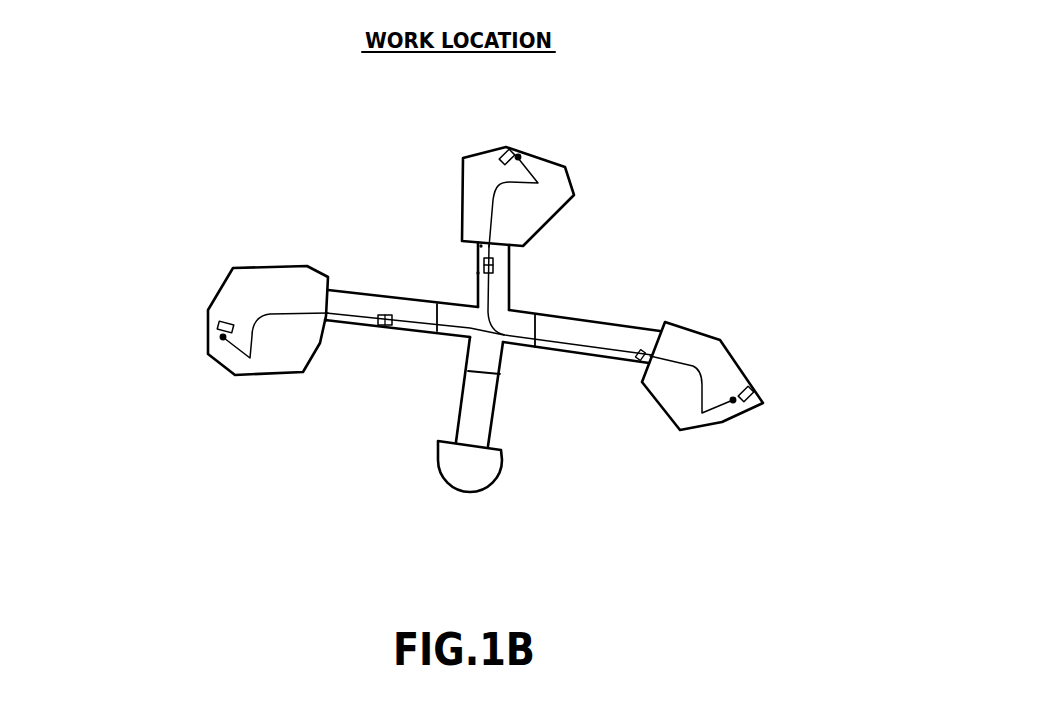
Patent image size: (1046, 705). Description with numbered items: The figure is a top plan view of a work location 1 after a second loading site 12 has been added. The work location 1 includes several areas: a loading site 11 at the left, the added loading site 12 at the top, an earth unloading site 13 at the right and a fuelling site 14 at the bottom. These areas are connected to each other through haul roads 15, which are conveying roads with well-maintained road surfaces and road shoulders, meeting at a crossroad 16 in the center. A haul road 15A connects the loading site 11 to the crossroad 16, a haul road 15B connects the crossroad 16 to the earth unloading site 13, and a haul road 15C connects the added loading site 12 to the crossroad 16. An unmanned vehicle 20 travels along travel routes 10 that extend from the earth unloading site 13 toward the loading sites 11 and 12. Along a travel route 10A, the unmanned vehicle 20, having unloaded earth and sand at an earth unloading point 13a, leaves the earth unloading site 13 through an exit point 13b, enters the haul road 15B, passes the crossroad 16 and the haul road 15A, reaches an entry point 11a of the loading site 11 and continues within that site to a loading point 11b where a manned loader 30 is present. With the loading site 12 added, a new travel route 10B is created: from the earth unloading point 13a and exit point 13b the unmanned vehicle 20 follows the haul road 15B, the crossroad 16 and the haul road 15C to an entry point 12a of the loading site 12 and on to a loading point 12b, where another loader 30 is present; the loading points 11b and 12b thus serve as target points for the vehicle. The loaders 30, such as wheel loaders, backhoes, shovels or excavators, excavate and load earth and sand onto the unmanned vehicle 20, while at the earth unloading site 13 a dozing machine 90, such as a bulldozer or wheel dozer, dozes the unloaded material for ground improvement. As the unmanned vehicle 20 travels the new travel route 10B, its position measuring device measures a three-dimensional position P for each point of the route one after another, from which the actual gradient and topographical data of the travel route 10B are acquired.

The work location 1 is at (627, 129).
The travel routes 10 is at (289, 490).
The travel route 10A is at (420, 329).
The travel route 10B is at (490, 295).
The loading site 11 is at (268, 268).
The entry point 11a is at (328, 322).
The loading point 11b is at (221, 338).
The loading site 12 is at (573, 183).
The entry point 12a is at (483, 247).
The loading point 12b is at (521, 156).
The earth unloading site 13 is at (690, 326).
The earth unloading point 13a is at (735, 403).
The exit point 13b is at (636, 362).
The fuelling site 14 is at (502, 468).
The haul roads 15 is at (290, 547).
The haul road 15A is at (385, 297).
The haul road 15B is at (624, 314).
The haul road 15C is at (510, 283).
The crossroad 16 is at (508, 344).
The unmanned vehicle 20 is at (387, 328).
The loader 30 is at (218, 325).
The dozing machine 90 is at (752, 388).
The three-dimensional position P is at (478, 273).